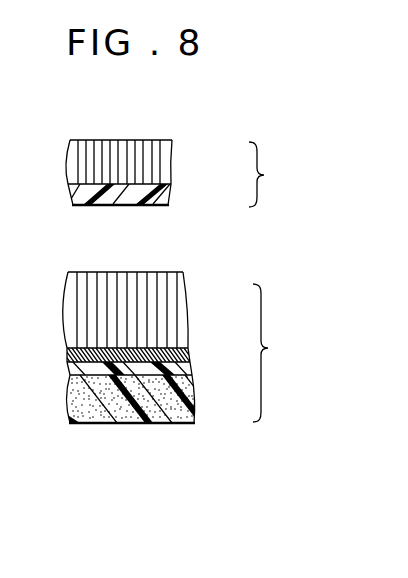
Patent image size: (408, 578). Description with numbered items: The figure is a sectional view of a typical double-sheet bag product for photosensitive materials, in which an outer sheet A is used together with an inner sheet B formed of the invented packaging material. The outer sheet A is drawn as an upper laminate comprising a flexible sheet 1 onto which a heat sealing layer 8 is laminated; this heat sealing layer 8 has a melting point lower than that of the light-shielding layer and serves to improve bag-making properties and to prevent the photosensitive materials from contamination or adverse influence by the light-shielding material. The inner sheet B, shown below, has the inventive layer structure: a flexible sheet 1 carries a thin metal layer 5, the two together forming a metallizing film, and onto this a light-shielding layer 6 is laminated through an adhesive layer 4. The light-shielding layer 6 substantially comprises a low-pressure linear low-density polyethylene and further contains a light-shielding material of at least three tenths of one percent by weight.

The flexible sheet 1 is at (163, 160).
The heat sealing layer 8 is at (165, 193).
The thin metal layer 5 is at (190, 352).
The adhesive layer 4 is at (192, 369).
The light-shielding layer 6 is at (195, 401).
The outer sheet A is at (265, 174).
The inner sheet B is at (269, 353).